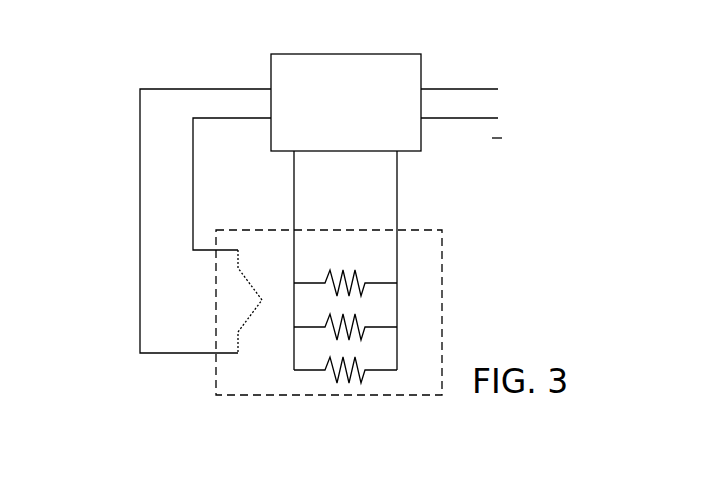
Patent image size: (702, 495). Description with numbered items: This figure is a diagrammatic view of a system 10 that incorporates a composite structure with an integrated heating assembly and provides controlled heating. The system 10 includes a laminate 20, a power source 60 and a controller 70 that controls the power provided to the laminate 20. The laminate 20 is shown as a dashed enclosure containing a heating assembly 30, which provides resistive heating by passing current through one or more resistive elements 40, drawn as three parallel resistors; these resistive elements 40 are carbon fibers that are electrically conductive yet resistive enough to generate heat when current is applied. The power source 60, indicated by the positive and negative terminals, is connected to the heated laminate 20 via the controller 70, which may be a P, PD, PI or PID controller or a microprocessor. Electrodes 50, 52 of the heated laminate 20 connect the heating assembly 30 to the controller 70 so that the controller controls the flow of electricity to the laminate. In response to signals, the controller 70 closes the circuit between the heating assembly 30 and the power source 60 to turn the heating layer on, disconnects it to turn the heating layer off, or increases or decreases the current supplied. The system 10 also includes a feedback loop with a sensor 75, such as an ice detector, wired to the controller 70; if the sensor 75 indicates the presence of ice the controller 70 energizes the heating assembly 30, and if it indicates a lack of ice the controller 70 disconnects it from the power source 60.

The system 10 is at (106, 119).
The laminate 20 is at (414, 295).
The heating assembly 30 is at (365, 230).
The resistive elements 40 is at (383, 285).
The electrode 50 is at (293, 203).
The electrode 52 is at (397, 197).
The power source 60 is at (508, 75).
The controller 70 is at (331, 135).
The sensor 75 is at (243, 311).